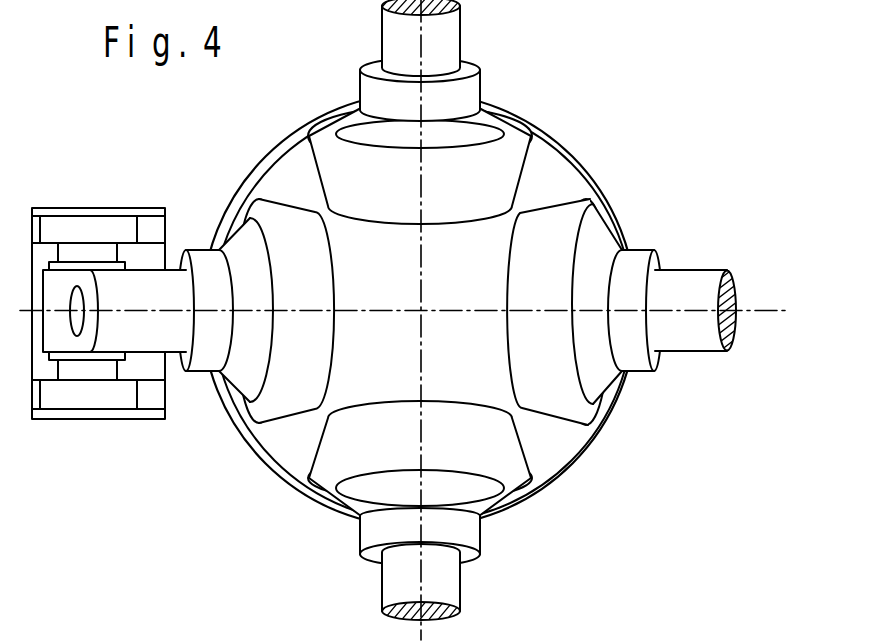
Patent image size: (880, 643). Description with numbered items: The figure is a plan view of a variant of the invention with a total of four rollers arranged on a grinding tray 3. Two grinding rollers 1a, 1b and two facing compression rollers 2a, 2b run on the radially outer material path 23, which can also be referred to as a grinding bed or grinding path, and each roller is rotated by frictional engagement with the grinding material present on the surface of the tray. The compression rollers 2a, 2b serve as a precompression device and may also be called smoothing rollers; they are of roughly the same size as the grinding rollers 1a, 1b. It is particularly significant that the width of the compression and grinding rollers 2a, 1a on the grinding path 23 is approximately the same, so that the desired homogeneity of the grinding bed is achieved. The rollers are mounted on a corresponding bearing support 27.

The grinding roller 1a is at (520, 177).
The grinding roller 1b is at (512, 450).
The compression roller 2a is at (552, 243).
The compression roller 2b is at (283, 405).
The grinding tray 3 is at (455, 288).
The radially outer material path 23 is at (297, 190).
The bearing support 27 is at (95, 393).